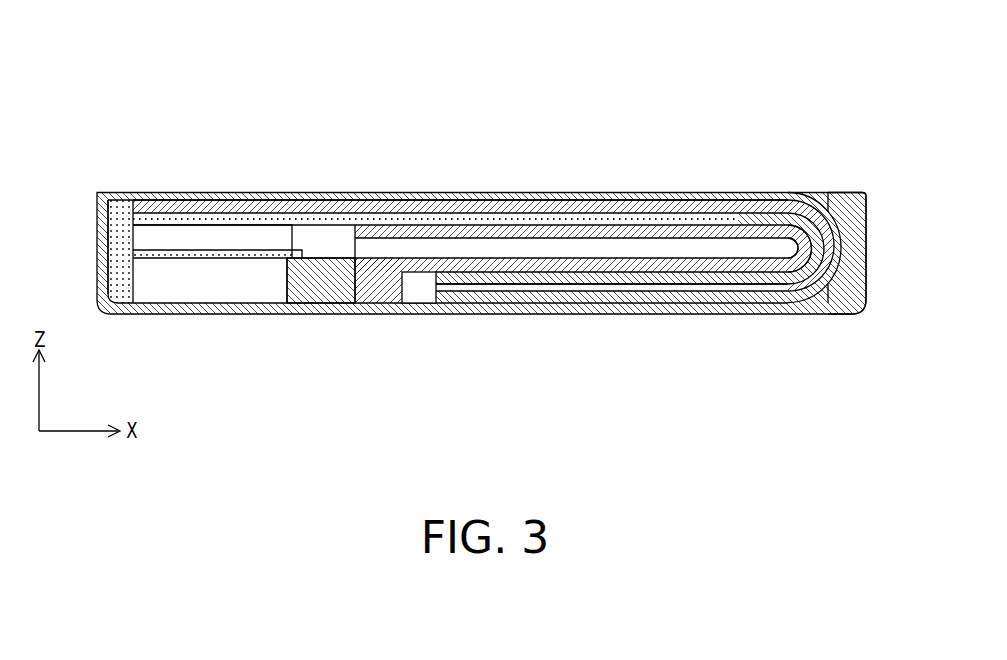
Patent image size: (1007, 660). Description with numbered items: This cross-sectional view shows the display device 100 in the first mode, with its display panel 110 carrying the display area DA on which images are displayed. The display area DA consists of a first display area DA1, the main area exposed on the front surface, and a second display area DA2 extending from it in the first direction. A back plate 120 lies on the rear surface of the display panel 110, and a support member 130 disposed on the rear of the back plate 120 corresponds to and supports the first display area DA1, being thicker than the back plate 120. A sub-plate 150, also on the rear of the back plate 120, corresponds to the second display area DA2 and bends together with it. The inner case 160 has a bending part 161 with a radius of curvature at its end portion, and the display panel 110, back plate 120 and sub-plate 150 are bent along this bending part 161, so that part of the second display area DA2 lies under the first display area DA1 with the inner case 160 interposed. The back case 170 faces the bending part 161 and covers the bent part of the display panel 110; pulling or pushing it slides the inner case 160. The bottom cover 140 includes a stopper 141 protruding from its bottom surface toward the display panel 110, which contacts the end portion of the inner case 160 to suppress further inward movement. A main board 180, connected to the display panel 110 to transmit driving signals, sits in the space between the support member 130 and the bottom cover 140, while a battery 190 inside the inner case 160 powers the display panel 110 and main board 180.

The display device 100 is at (857, 58).
The display panel 110 is at (188, 193).
The back plate 120 is at (306, 207).
The support member 130 is at (120, 233).
The bottom cover 140 is at (103, 279).
The stopper 141 is at (318, 287).
The sub-plate 150 is at (702, 277).
The inner case 160 is at (468, 266).
The bending part 161 is at (799, 254).
The back case 170 is at (858, 247).
The main board 180 is at (224, 234).
The battery 190 is at (547, 249).
The display area DA is at (777, 113).
The first display area DA1 is at (702, 191).
The second display area DA2 is at (767, 191).